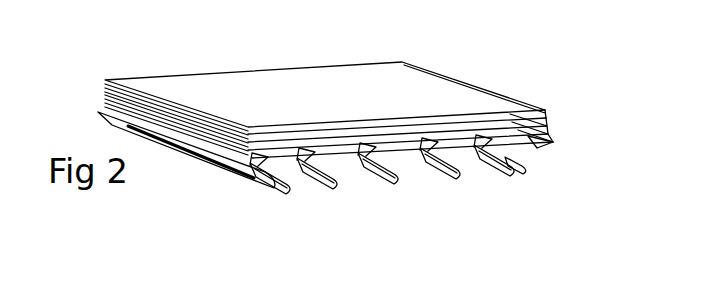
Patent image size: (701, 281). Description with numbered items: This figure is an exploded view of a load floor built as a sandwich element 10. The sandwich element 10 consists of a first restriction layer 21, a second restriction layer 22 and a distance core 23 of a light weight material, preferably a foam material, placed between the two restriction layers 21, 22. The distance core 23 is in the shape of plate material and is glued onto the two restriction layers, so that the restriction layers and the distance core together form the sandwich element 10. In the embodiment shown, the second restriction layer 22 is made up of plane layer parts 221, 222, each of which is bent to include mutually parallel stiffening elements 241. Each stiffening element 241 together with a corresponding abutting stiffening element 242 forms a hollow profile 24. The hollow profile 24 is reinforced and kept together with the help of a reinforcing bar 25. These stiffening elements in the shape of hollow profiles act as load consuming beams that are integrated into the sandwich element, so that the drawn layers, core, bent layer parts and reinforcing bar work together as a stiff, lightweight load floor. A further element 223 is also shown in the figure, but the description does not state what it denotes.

The sandwich element 10 is at (281, 56).
The first restriction layer 21 is at (420, 87).
The distance core 23 is at (465, 127).
The connecting portion 223 is at (537, 140).
The hollow profile 24 is at (532, 155).
The reinforcing bar 25 is at (255, 170).
The stiffening element 241 is at (255, 172).
The abutting stiffening element 242 is at (283, 166).
The second restriction layer 22 is at (340, 147).
The plane layer part 221 is at (435, 148).
The plane layer part 222 is at (487, 147).